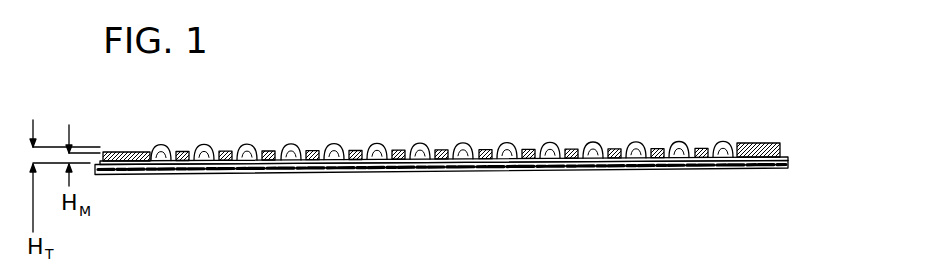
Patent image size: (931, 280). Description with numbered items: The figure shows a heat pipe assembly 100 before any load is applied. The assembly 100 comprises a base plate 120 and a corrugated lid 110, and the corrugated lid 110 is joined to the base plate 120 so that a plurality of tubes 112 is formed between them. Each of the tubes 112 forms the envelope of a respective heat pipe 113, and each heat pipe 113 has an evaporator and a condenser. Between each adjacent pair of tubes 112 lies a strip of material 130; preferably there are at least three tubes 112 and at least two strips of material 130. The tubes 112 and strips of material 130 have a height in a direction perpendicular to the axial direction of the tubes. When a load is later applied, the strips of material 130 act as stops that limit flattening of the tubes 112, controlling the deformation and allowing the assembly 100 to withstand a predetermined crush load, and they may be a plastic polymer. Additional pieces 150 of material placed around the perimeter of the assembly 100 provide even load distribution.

The heat pipe assembly 100 is at (515, 237).
The corrugated lid 110 is at (418, 134).
The tubes 112 is at (512, 142).
The heat pipe 113 is at (729, 127).
The base plate 120 is at (788, 166).
The strips of material 130 is at (222, 150).
The additional pieces of material 150 is at (767, 142).